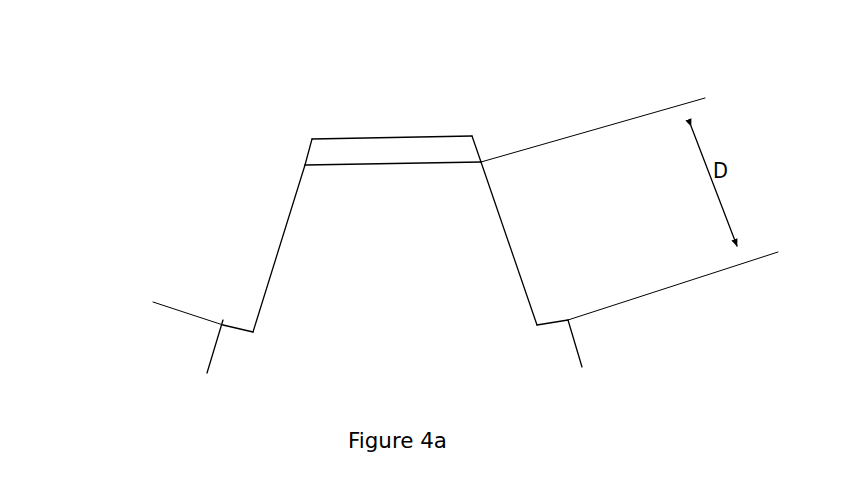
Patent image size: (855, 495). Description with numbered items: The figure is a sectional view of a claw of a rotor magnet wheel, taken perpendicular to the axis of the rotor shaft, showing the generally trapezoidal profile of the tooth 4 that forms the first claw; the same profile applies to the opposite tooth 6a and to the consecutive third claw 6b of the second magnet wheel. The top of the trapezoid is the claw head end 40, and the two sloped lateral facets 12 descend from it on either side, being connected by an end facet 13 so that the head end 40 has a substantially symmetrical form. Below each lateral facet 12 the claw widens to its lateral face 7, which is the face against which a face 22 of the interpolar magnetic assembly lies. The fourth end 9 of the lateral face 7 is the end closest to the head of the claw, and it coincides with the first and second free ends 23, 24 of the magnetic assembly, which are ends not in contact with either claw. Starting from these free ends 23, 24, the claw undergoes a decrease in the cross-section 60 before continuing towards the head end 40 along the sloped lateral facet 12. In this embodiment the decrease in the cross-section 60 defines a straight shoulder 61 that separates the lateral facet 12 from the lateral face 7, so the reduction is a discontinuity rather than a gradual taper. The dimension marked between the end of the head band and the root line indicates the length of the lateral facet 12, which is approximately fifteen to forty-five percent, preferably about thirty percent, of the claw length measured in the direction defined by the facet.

The tooth 4 is at (338, 177).
The tooth 6a is at (338, 177).
The third claw 6b is at (338, 177).
The lateral face 7 is at (392, 401).
The fourth end 9 is at (415, 244).
The lateral facet 12 is at (333, 282).
The end facet 13 is at (356, 131).
The first face 22 is at (222, 371).
The first free end 23 is at (421, 231).
The second free end 24 is at (203, 320).
The claw head end 40 is at (418, 137).
The decrease in the cross-section 60 is at (222, 325).
The straight shoulder 61 is at (568, 320).